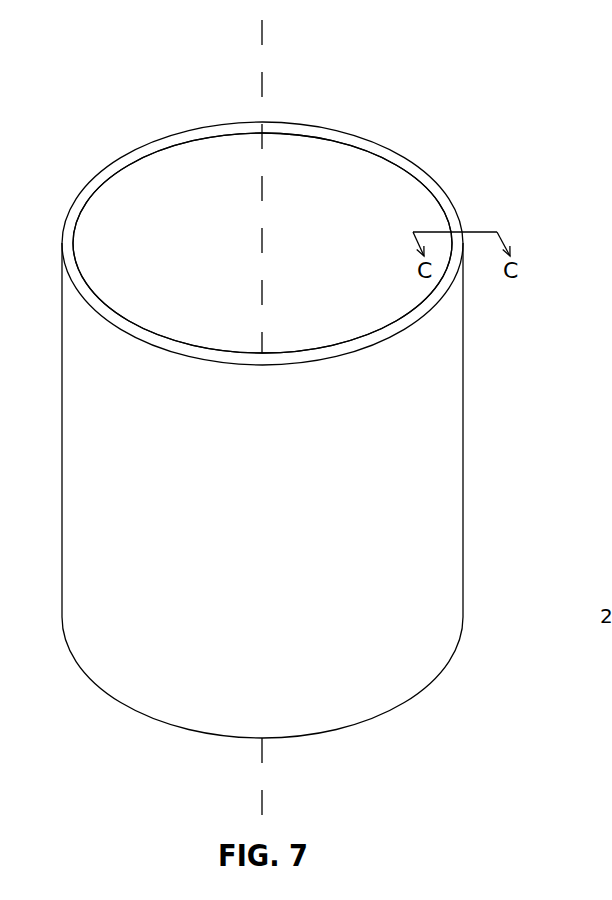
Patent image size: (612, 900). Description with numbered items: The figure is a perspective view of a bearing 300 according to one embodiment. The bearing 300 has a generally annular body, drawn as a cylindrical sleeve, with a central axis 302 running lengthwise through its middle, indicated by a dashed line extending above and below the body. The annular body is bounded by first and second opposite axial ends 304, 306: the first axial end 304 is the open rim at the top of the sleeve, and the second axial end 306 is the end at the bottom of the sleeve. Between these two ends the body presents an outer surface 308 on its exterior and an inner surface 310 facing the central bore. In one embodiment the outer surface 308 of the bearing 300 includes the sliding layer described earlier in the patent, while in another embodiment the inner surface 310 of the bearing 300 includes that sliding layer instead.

The bearing 300 is at (378, 58).
The central axis 302 is at (261, 27).
The first axial end 304 is at (443, 188).
The second axial end 306 is at (418, 693).
The outer surface 308 is at (464, 420).
The inner surface 310 is at (85, 278).